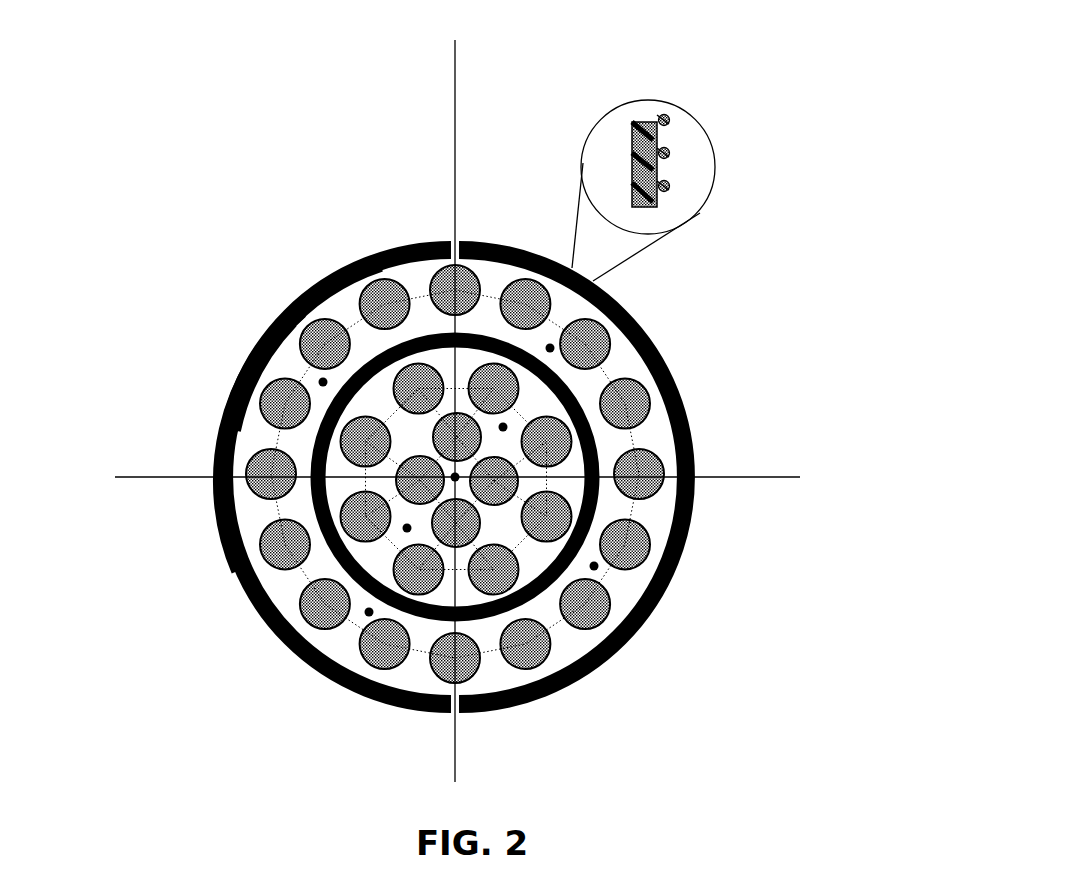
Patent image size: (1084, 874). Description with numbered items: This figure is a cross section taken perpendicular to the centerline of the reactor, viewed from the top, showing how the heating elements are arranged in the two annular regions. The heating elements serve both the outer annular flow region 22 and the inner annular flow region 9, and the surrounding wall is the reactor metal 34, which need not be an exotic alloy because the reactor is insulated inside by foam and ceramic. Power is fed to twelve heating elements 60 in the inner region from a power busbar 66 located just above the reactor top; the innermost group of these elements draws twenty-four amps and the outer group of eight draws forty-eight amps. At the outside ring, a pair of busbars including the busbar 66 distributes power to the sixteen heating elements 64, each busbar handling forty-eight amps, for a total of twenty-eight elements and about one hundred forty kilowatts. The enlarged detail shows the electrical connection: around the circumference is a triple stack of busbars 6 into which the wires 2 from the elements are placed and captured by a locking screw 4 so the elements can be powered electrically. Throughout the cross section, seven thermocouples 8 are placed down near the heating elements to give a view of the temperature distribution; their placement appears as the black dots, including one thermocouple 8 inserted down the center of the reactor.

The wires 2 is at (632, 172).
The locking screw 4 is at (632, 120).
The busbars 6 is at (672, 152).
The thermocouple 8 is at (505, 425).
The inner annular flow region 9 is at (572, 495).
The outer annular flow region 22 is at (600, 445).
The reactor metal 34 is at (657, 603).
The heating elements 60 is at (237, 562).
The heating elements 64 is at (263, 402).
The power busbar 66 is at (313, 283).